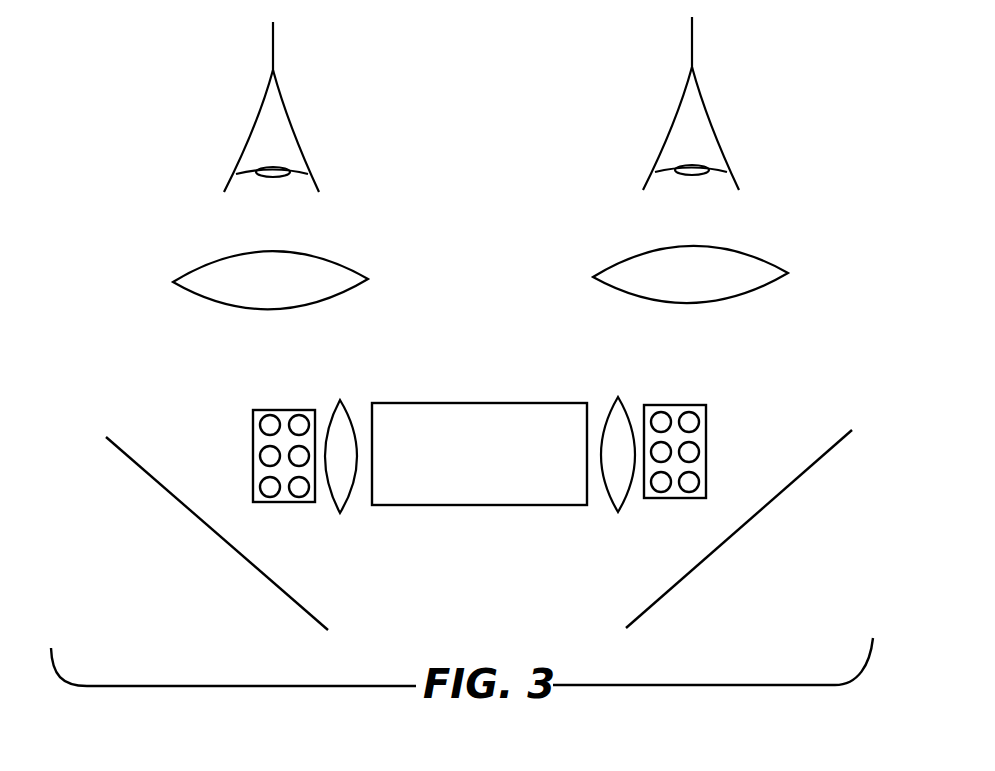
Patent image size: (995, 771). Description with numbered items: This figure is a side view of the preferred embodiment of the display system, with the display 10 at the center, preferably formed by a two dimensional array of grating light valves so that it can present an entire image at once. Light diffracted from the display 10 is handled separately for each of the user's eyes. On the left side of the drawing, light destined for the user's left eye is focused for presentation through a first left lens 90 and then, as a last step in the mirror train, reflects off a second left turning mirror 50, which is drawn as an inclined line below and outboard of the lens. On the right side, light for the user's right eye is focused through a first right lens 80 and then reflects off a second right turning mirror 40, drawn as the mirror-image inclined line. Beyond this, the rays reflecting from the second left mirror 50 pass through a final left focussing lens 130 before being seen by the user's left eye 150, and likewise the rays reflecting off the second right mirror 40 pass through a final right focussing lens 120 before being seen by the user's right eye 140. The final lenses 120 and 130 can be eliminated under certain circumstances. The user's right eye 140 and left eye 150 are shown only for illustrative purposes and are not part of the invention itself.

The display 10 is at (532, 403).
The second right turning mirror 40 is at (707, 558).
The second left turning mirror 50 is at (223, 538).
The first right lens 80 is at (621, 405).
The first left lens 90 is at (338, 402).
The final right focussing lens 120 is at (788, 273).
The final left focussing lens 130 is at (367, 279).
The user's right eye 140 is at (694, 78).
The user's left eye 150 is at (276, 80).